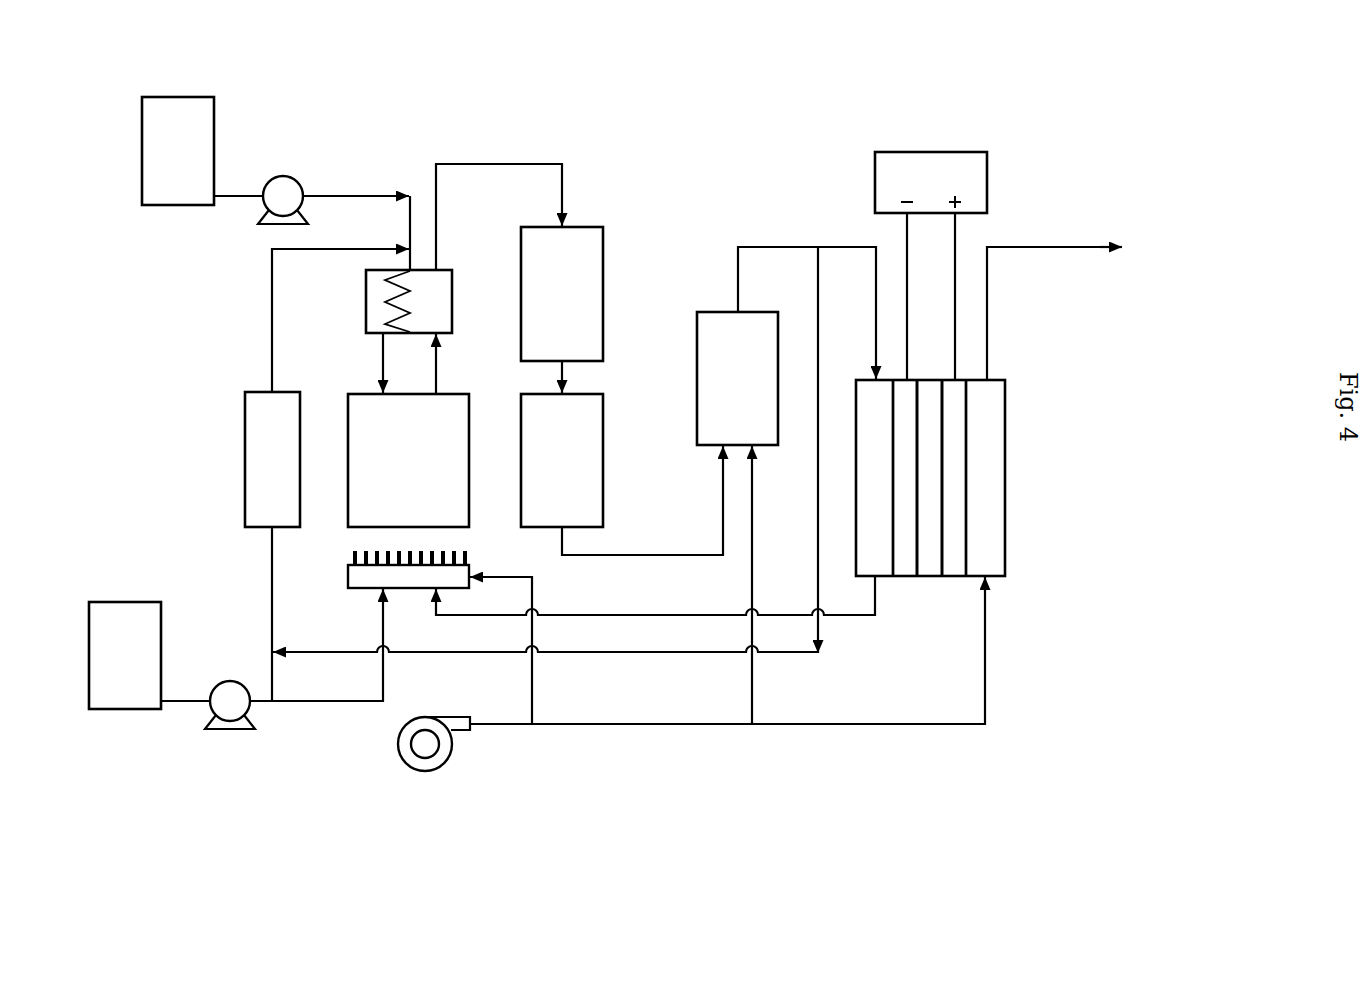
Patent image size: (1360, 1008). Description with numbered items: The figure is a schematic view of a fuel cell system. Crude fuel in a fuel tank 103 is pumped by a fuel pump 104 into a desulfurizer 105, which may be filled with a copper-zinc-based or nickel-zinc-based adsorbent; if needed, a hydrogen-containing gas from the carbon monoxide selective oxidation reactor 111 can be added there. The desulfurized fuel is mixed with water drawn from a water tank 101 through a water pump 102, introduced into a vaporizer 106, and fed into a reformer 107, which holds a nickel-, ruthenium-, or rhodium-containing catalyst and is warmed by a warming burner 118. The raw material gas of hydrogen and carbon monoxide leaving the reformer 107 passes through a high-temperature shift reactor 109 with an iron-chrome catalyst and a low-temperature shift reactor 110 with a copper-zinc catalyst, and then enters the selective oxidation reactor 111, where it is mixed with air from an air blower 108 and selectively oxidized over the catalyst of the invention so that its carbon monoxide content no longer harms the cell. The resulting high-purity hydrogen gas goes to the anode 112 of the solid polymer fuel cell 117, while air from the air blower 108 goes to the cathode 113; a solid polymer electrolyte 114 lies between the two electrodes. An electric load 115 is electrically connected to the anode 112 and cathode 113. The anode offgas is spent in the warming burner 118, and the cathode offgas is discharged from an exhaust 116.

The water tank 101 is at (173, 97).
The water pump 102 is at (300, 182).
The fuel tank 103 is at (125, 602).
The fuel pump 104 is at (228, 682).
The desulfurizer 105 is at (285, 392).
The vaporizer 106 is at (446, 270).
The reformer 107 is at (455, 394).
The air blower 108 is at (406, 763).
The high-temperature shift reactor 109 is at (603, 327).
The low-temperature shift reactor 110 is at (603, 481).
The carbon monoxide selective oxidation reactor 111 is at (705, 312).
The anode 112 is at (900, 393).
The cathode 113 is at (958, 393).
The solid polymer electrolyte 114 is at (936, 577).
The electric load 115 is at (962, 152).
The exhaust 116 is at (1138, 246).
The fuel cell 117 is at (1050, 452).
The warming burner 118 is at (350, 575).